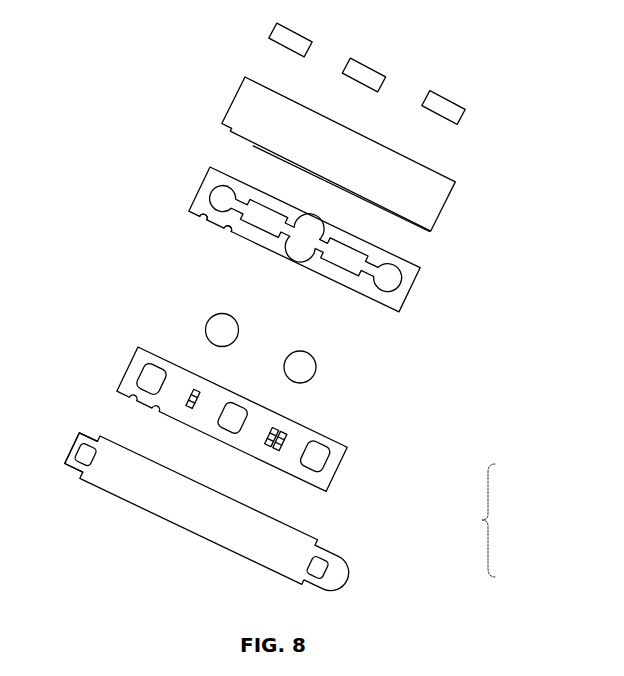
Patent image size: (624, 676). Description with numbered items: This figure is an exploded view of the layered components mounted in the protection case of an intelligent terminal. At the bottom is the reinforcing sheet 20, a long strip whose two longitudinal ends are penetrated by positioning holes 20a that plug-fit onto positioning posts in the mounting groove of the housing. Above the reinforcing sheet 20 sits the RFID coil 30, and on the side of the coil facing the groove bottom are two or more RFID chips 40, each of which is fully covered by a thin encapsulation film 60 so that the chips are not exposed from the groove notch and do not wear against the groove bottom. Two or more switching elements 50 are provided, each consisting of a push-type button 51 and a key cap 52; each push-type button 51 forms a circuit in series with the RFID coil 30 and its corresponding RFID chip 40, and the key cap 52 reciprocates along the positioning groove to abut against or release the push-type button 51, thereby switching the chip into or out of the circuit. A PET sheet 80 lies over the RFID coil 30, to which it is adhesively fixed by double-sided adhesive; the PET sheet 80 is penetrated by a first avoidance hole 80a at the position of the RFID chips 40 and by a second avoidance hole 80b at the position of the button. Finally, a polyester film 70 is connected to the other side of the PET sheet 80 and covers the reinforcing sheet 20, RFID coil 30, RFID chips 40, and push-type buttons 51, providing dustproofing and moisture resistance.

The reinforcing sheet 20 is at (206, 516).
The positioning holes 20a is at (76, 447).
The RFID coil 30 is at (320, 419).
The RFID chips 40 is at (272, 426).
The switching elements 50 is at (476, 520).
The push-type button 51 is at (318, 440).
The key cap 52 is at (291, 29).
The encapsulation film 60 is at (238, 323).
The polyester film 70 is at (437, 207).
The PET sheet 80 is at (309, 239).
The first avoidance hole 80a is at (258, 232).
The second avoidance hole 80b is at (207, 214).